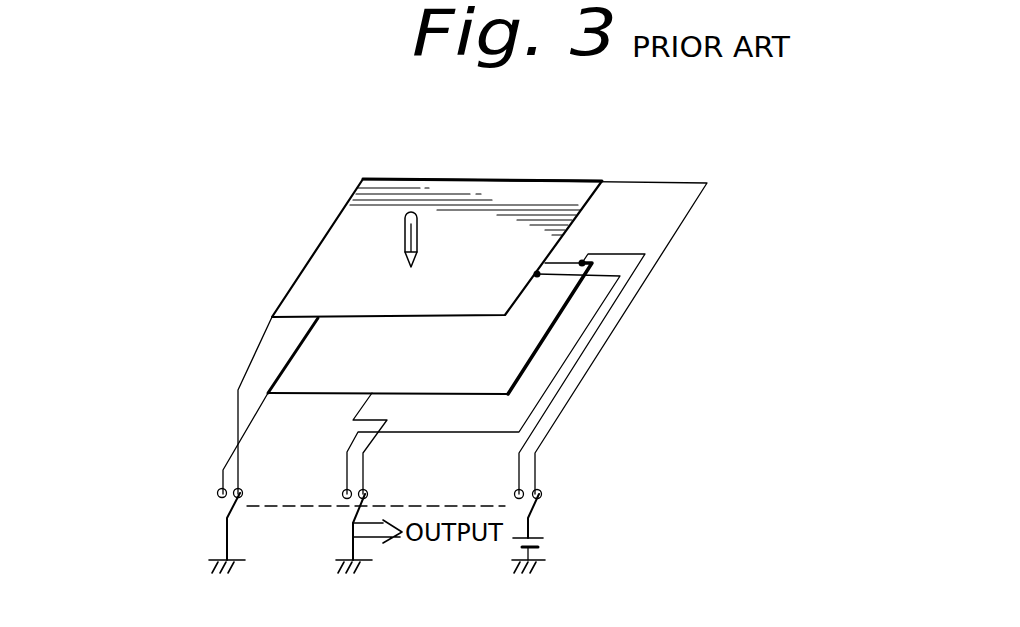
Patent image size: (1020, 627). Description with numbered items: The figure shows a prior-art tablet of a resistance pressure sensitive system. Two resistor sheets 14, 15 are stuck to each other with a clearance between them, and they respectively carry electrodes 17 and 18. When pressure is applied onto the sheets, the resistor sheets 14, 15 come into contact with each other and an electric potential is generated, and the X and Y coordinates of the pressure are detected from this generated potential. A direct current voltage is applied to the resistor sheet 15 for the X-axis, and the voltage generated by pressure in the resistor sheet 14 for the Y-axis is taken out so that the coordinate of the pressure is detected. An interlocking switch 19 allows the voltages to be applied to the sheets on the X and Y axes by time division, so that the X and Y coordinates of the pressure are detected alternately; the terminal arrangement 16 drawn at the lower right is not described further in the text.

The resistor sheet 14 is at (318, 280).
The resistor sheet 15 is at (512, 368).
The switch with voltage source 16 is at (543, 493).
The electrode 17 is at (532, 181).
The electrode 18 is at (567, 307).
The interlocking switch 19 is at (206, 498).